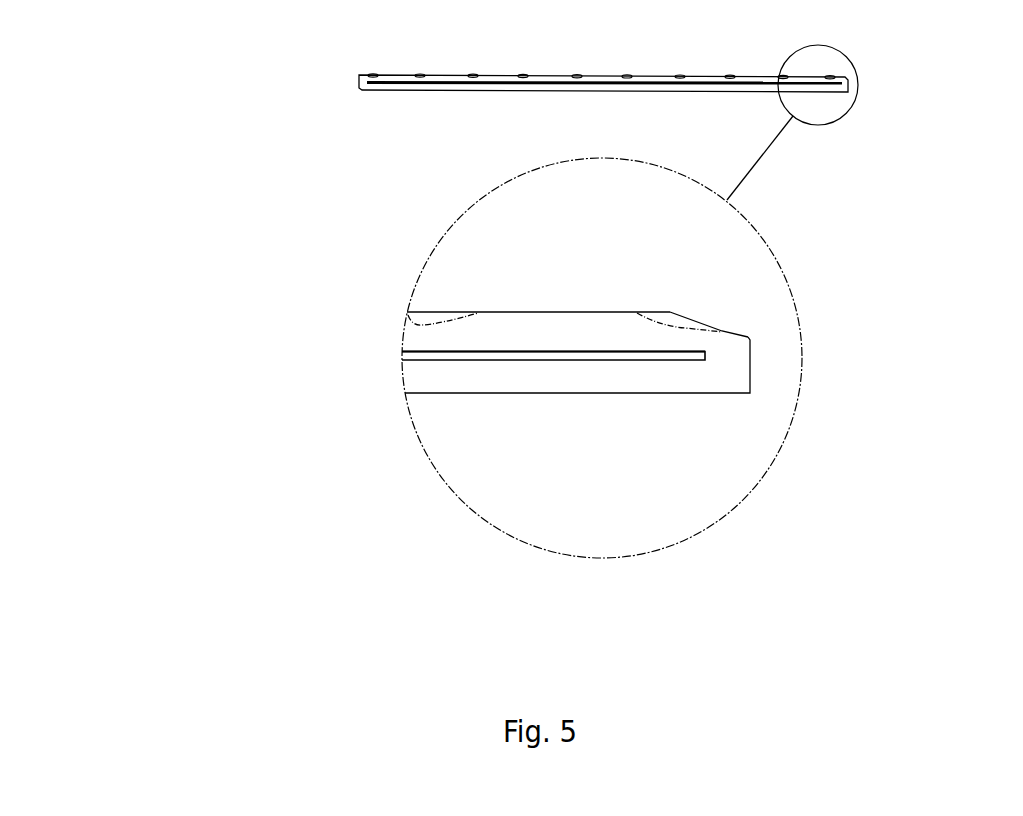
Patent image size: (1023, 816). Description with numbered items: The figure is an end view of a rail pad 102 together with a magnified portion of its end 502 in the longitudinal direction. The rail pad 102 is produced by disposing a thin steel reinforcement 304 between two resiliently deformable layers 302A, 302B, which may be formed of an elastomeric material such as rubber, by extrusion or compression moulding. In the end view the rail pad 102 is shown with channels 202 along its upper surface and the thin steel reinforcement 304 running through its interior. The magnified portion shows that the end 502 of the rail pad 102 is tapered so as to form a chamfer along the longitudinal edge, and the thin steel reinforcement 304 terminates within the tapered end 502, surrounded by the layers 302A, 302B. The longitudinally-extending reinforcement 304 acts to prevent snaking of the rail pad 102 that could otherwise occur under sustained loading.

The rail pad 102 is at (411, 352).
The channels 202 is at (445, 317).
The end 502 is at (720, 330).
The resiliently deformable layer 302A is at (588, 342).
The resiliently deformable layer 302B is at (588, 385).
The thin steel reinforcement 304 is at (523, 362).